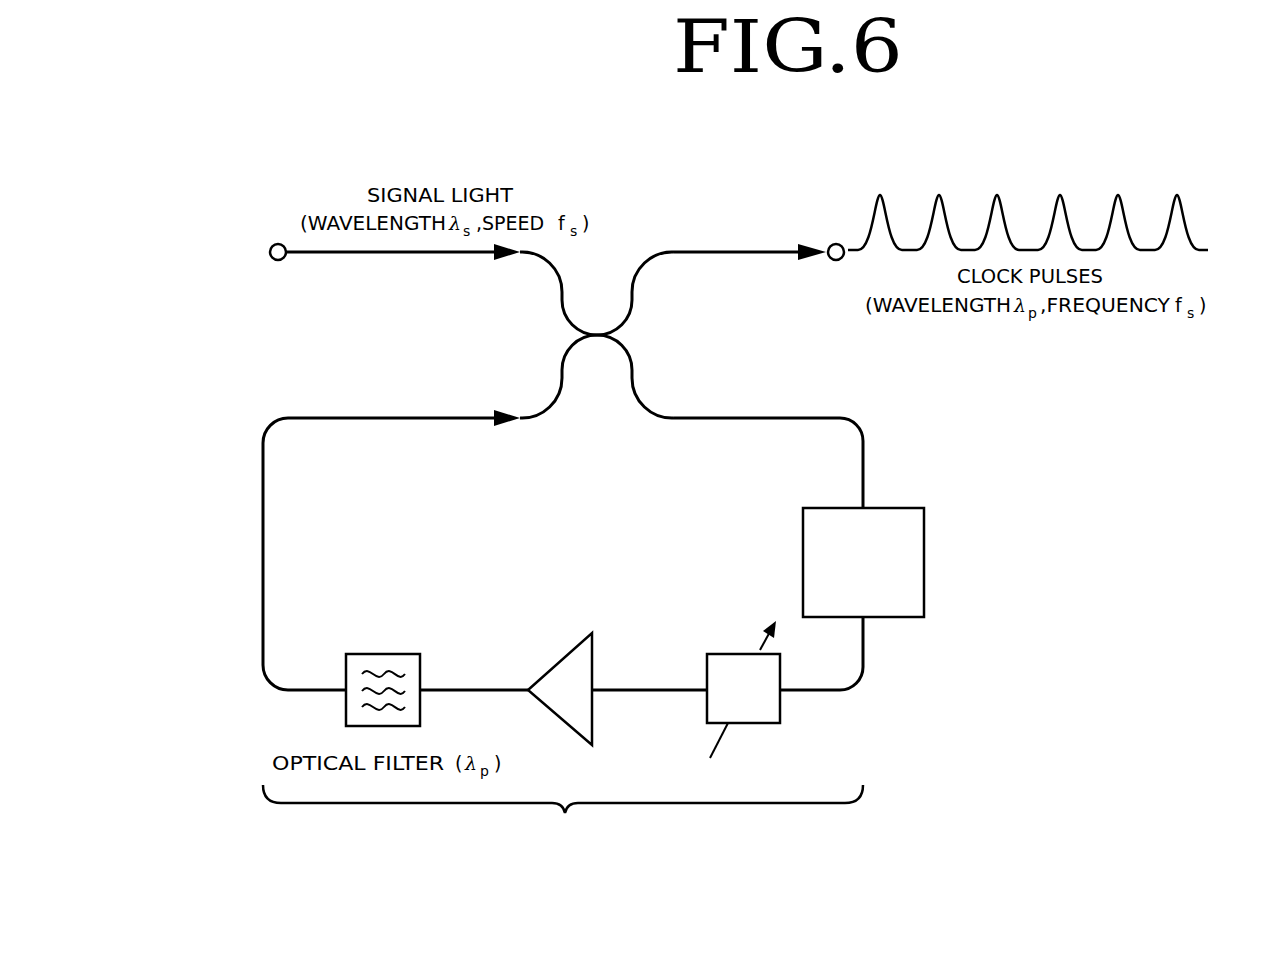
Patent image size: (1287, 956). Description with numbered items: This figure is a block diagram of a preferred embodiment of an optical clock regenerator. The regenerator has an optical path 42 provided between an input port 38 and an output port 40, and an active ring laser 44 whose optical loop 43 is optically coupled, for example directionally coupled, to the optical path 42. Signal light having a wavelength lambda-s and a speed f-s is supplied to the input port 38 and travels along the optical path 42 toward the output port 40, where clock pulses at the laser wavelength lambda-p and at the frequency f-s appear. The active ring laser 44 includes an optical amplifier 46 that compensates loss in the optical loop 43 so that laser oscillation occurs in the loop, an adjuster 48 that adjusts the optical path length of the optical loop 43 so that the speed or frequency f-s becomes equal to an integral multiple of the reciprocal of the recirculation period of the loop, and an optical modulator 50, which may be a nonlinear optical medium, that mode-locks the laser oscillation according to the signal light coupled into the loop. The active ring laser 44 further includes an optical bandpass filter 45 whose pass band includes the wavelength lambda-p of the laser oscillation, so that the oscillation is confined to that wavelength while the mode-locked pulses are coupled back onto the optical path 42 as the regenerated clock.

The input port 38 is at (278, 243).
The output port 40 is at (836, 242).
The optical path 42 is at (731, 249).
The optical loop 43 is at (751, 420).
The active ring laser 44 is at (563, 634).
The optical bandpass filter 45 is at (383, 652).
The optical amplifier 46 is at (560, 661).
The adjuster 48 is at (735, 652).
The optical modulator 50 is at (925, 568).